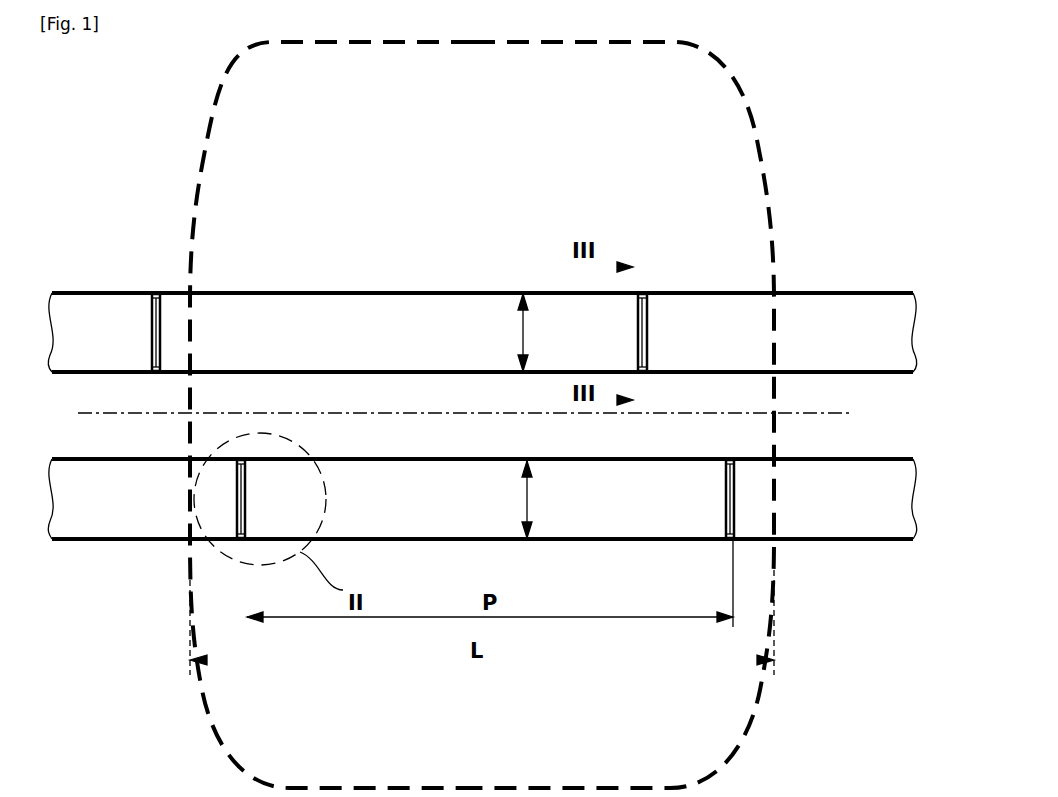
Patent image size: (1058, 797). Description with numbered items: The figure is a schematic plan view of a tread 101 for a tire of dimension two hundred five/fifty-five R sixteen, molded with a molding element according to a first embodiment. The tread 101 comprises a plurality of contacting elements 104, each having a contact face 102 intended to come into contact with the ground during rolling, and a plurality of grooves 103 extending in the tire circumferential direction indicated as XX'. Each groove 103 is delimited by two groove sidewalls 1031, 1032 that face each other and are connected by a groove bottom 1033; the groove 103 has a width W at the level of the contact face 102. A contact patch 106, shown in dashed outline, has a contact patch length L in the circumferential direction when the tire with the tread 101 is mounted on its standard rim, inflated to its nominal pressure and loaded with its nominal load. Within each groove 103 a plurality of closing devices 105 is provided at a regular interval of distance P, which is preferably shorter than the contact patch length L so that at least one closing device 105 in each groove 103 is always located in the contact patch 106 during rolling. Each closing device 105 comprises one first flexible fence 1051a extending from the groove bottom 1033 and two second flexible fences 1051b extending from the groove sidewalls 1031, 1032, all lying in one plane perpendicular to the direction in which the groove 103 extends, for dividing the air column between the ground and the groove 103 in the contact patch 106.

The tread 101 is at (743, 154).
The contact face 102 is at (451, 416).
The groove 103 is at (842, 345).
The groove sidewall 1031 is at (797, 300).
The groove sidewall 1032 is at (318, 371).
The groove bottom 1033 is at (504, 416).
The contacting element 104 is at (470, 553).
The closing device 105 is at (137, 312).
The first flexible fence 1051a is at (152, 330).
The second flexible fence 1051b is at (160, 298).
The contact patch 106 is at (216, 128).